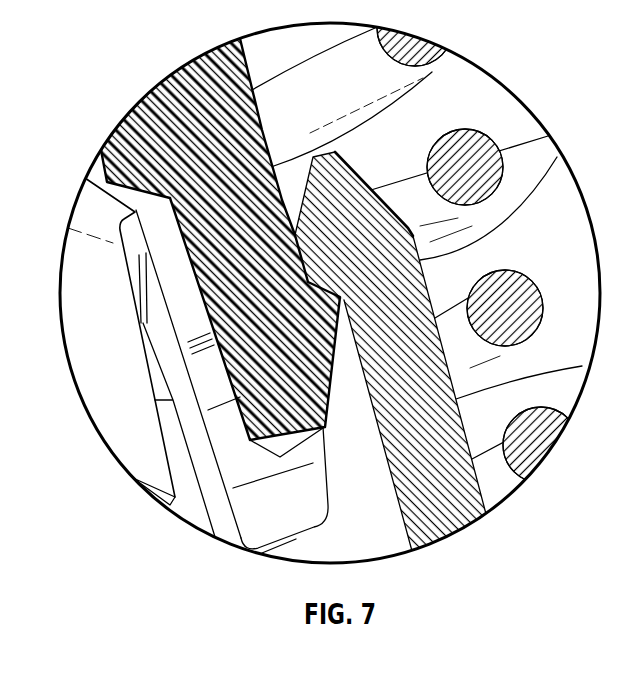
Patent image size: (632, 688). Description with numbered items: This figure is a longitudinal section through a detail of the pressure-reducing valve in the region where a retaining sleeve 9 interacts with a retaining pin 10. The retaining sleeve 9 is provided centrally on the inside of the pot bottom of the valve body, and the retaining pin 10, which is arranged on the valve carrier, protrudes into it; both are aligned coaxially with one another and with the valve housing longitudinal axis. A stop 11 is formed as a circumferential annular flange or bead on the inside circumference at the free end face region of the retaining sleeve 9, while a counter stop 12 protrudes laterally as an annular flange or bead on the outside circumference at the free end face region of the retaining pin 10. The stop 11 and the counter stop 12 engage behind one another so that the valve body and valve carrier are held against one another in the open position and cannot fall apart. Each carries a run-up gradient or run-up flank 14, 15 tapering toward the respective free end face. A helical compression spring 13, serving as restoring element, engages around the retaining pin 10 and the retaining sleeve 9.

The retaining sleeve 9 is at (450, 503).
The retaining pin 10 is at (205, 150).
The stop 11 is at (307, 241).
The counter stop 12 is at (340, 313).
The helical compression spring 13 is at (520, 307).
The run-up flank 14 is at (308, 185).
The run-up flank 15 is at (337, 384).